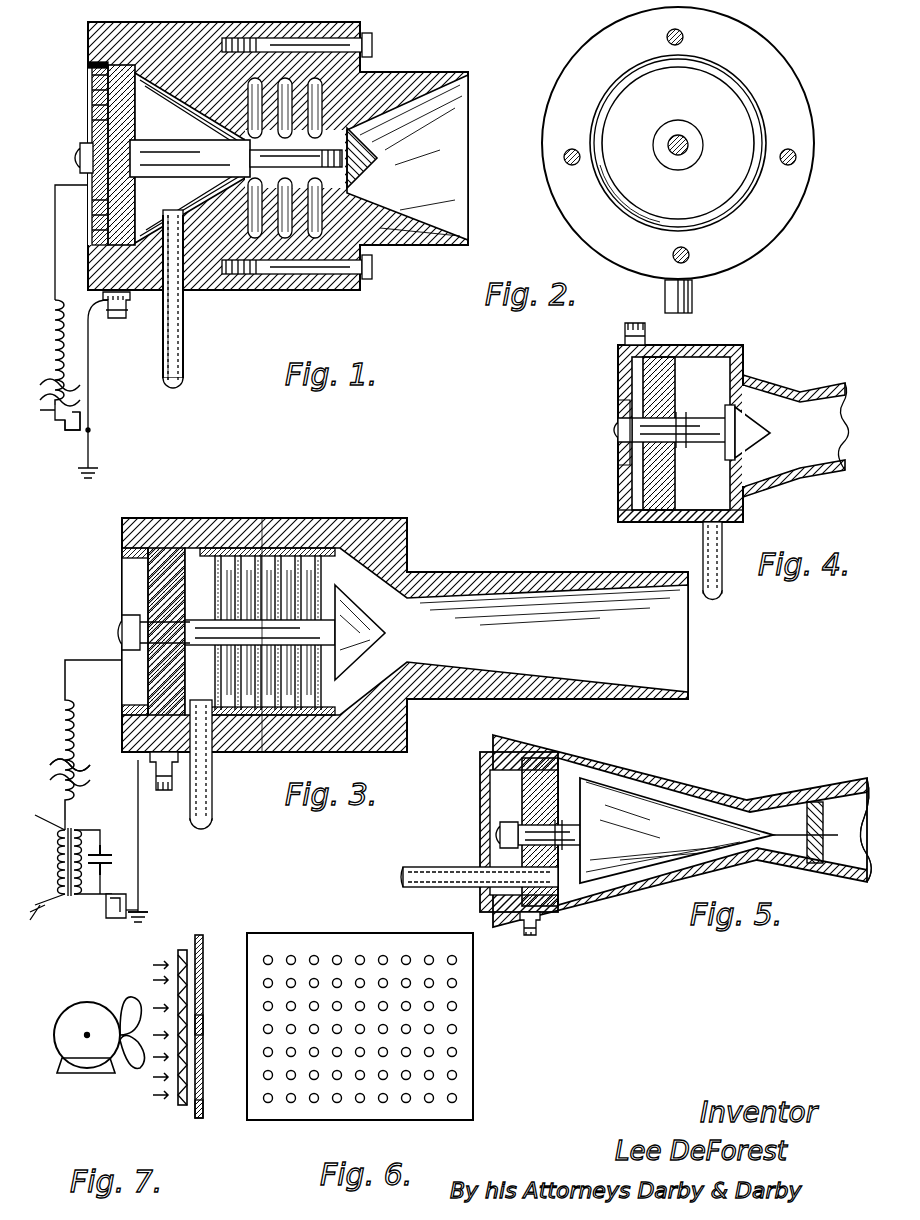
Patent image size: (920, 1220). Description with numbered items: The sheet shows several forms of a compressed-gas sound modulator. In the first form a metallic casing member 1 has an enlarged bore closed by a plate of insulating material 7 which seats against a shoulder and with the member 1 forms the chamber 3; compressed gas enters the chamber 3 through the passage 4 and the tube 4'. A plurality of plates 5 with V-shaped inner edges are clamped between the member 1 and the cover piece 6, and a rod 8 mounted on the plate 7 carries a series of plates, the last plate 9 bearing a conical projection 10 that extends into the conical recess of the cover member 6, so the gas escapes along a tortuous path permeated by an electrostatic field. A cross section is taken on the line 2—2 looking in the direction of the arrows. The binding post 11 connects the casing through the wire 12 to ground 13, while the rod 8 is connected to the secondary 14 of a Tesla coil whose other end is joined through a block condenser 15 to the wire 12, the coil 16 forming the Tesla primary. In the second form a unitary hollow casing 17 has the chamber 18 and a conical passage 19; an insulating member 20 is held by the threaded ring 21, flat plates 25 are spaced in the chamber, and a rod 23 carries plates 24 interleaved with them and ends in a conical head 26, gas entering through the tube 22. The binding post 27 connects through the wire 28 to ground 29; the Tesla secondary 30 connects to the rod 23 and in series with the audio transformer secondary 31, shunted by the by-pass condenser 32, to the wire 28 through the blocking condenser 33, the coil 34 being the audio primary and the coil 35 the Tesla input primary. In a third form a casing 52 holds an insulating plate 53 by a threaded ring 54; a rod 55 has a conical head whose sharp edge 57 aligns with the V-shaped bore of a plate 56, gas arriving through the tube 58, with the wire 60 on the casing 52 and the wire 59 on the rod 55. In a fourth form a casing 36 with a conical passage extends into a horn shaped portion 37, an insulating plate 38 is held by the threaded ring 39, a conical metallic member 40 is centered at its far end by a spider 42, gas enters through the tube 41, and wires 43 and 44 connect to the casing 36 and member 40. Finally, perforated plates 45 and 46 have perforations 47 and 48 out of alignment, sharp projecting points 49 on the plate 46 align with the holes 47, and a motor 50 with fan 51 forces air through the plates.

In FIG. 1, the casing member 1 is at (244, 302).
In FIG. 1, the section line 2 is at (90, 66).
In FIG. 1, the chamber 3 is at (130, 155).
In FIG. 1, the passage 4 is at (173, 312).
In FIG. 2, the passage 4 is at (693, 298).
In FIG. 1, the tube 4' is at (187, 297).
In FIG. 1, the plates 5 is at (300, 292).
In FIG. 2, the plates 5 is at (678, 143).
In FIG. 1, the cover piece 6 is at (437, 252).
In FIG. 1, the plate of insulating material 7 is at (92, 112).
In FIG. 1, the rod 8 is at (208, 158).
In FIG. 2, the rod 8 is at (692, 155).
In FIG. 1, the last plate 9 is at (245, 182).
In FIG. 2, the last plate 9 is at (678, 143).
In FIG. 1, the conical projection 10 is at (371, 170).
In FIG. 1, the binding post 11 is at (131, 322).
In FIG. 1, the wire 12 is at (96, 403).
In FIG. 1, the ground 13 is at (92, 430).
In FIG. 1, the secondary of Tesla coil 14 is at (58, 300).
In FIG. 1, the block condenser 15 is at (68, 430).
In FIG. 1, the primary coil 16 is at (70, 370).
In FIG. 3, the hollow casing 17 is at (180, 518).
In FIG. 3, the chamber 18 is at (148, 580).
In FIG. 3, the conical passage 19 is at (436, 631).
In FIG. 3, the insulating member 20 is at (130, 615).
In FIG. 3, the threaded ring 21 is at (122, 555).
In FIG. 3, the tube 22 is at (205, 825).
In FIG. 3, the rod 23 is at (200, 648).
In FIG. 3, the plates 24 is at (262, 752).
In FIG. 3, the flat plates 25 is at (245, 548).
In FIG. 3, the conical head 26 is at (396, 636).
In FIG. 3, the binding post 27 is at (165, 792).
In FIG. 3, the wire 28 is at (144, 877).
In FIG. 3, the ground 29 is at (164, 931).
In FIG. 3, the secondary of Tesla coil 30 is at (72, 728).
In FIG. 3, the secondary of audio frequency transformer 31 is at (86, 830).
In FIG. 3, the radio frequency by-pass condenser 32 is at (112, 852).
In FIG. 3, the blocking condenser 33 is at (112, 910).
In FIG. 3, the primary of audio frequency transformer 34 is at (55, 874).
In FIG. 3, the input primary coil 35 is at (48, 744).
In FIG. 5, the casing 36 is at (692, 777).
In FIG. 5, the horn shaped portion 37 is at (862, 883).
In FIG. 5, the insulating plate 38 is at (566, 774).
In FIG. 5, the threaded ring 39 is at (490, 780).
In FIG. 5, the conical metallic member 40 is at (676, 830).
In FIG. 5, the tube 41 is at (410, 870).
In FIG. 5, the spider 42 is at (823, 818).
In FIG. 5, the wire 43 is at (545, 932).
In FIG. 5, the wire 44 is at (500, 820).
In FIG. 6, the perforated plate 45 is at (466, 1065).
In FIG. 7, the perforated plate 45 is at (208, 1020).
In FIG. 7, the perforated plate 46 is at (178, 1105).
In FIG. 6, the perforations 47 is at (466, 1031).
In FIG. 7, the perforations 47 is at (205, 960).
In FIG. 7, the perforations 48 is at (150, 985).
In FIG. 7, the sharp projecting points 49 is at (195, 1120).
In FIG. 7, the motor 50 is at (70, 1015).
In FIG. 7, the fan 51 is at (130, 1060).
In FIG. 4, the casing 52 is at (754, 355).
In FIG. 4, the insulating plate 53 is at (643, 404).
In FIG. 4, the threaded ring 54 is at (618, 505).
In FIG. 4, the rod 55 is at (705, 440).
In FIG. 4, the plate 56 is at (740, 460).
In FIG. 4, the sharp edge 57 is at (725, 410).
In FIG. 4, the tube 58 is at (716, 578).
In FIG. 4, the wire 59 is at (592, 468).
In FIG. 4, the wire 60 is at (613, 344).